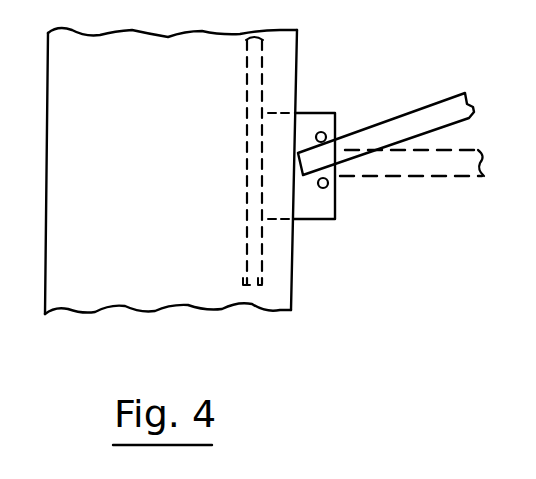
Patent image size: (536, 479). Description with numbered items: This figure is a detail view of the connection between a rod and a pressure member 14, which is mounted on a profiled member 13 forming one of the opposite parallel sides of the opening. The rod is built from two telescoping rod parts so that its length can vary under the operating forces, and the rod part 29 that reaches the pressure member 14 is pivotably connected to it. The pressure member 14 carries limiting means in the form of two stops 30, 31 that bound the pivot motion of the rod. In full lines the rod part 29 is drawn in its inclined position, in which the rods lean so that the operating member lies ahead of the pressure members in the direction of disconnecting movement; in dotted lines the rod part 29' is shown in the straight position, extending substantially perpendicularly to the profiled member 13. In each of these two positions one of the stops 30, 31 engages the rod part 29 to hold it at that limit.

The profiled member 13 is at (115, 292).
The pressure member 14 is at (257, 107).
The rod part 29 is at (386, 117).
The rod part in straight position 29' is at (412, 193).
The stop 30 is at (323, 189).
The stop 31 is at (325, 132).